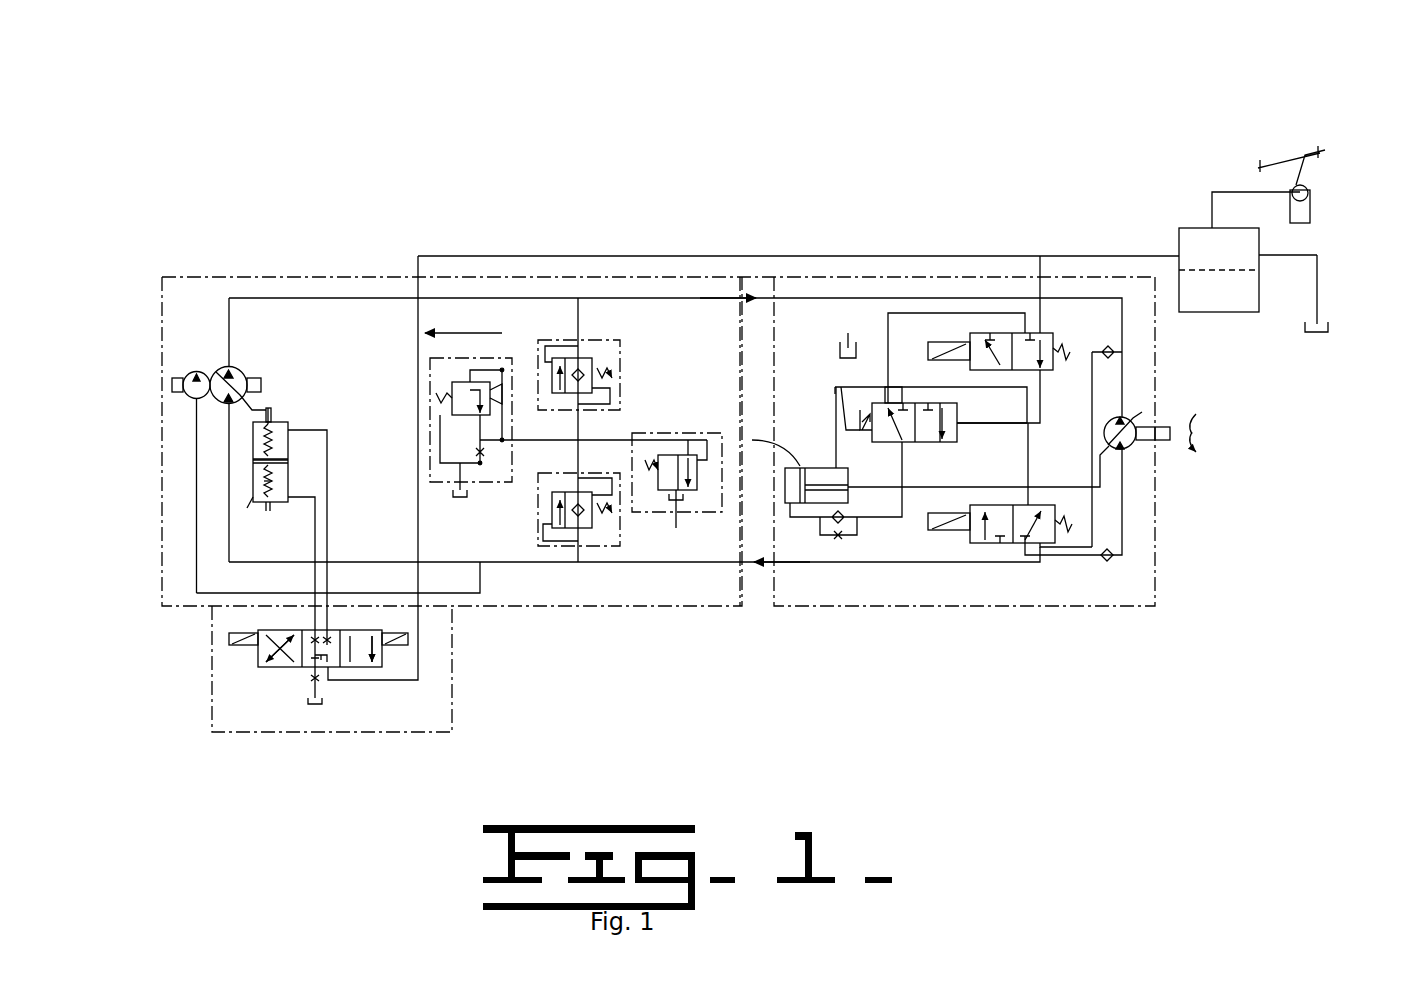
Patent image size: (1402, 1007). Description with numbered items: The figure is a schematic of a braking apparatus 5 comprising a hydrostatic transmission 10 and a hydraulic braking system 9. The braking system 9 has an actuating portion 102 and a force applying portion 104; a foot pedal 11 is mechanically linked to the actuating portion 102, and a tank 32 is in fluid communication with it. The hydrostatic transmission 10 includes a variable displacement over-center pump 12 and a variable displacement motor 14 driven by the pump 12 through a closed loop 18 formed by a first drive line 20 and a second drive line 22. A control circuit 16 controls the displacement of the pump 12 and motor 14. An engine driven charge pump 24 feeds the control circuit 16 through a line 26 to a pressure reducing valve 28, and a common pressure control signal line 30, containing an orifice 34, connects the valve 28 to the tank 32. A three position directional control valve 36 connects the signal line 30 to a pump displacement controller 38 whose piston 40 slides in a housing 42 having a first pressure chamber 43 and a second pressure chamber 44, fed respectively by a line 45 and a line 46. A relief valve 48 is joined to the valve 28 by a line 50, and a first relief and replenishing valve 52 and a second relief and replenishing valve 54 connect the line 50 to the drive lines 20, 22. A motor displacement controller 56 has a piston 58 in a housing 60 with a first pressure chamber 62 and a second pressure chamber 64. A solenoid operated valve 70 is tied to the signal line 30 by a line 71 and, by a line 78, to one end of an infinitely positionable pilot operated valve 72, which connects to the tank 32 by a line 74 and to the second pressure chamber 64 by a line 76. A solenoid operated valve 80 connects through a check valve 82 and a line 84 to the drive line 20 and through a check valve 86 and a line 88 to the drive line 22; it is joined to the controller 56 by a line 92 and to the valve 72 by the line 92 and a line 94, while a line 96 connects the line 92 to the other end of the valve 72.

The braking apparatus 5 is at (798, 135).
The hydraulic braking system 9 is at (1186, 212).
The hydrostatic transmission 10 is at (352, 175).
The foot pedal 11 is at (1305, 150).
The variable displacement over-center pump 12 is at (250, 365).
The variable displacement motor 14 is at (1140, 420).
The control circuit 16 is at (758, 245).
The closed loop 18 is at (283, 293).
The first drive line 20 is at (392, 297).
The second drive line 22 is at (565, 563).
The engine driven charge pump 24 is at (178, 352).
The line 26 is at (205, 598).
The pressure reducing valve 28 is at (497, 490).
The common pressure control signal line 30 is at (612, 255).
The tank 32 is at (324, 698).
The orifice 34 is at (462, 332).
The three position directional control valve 36 is at (298, 675).
The pump displacement controller 38 is at (283, 508).
The piston 40 is at (290, 459).
The housing 42 is at (290, 483).
The first pressure chamber 43 is at (276, 408).
The second pressure chamber 44 is at (257, 500).
The line 45 is at (329, 432).
The line 46 is at (318, 509).
The relief valve 48 is at (682, 428).
The line 50 is at (610, 440).
The first relief and replenishing valve 52 is at (623, 355).
The second relief and replenishing valve 54 is at (624, 528).
The motor displacement controller 56 is at (823, 456).
The piston 58 is at (771, 439).
The housing 60 is at (821, 460).
The first pressure chamber 62 is at (836, 475).
The second pressure chamber 64 is at (788, 503).
The solenoid operated valve 70 is at (1050, 330).
The line 71 is at (1036, 290).
The infinitely positionable pilot operated valve 72 is at (957, 448).
The line 74 is at (888, 325).
The line 76 is at (872, 520).
The line 78 is at (975, 430).
The solenoid operated valve 80 is at (986, 545).
The check valve 82 is at (1108, 345).
The line 84 is at (1090, 402).
The check valve 86 is at (1100, 558).
The line 88 is at (1027, 557).
The line 92 is at (940, 385).
The line 94 is at (905, 394).
The line 96 is at (843, 387).
The actuating portion 102 is at (1199, 264).
The force applying portion 104 is at (1199, 305).